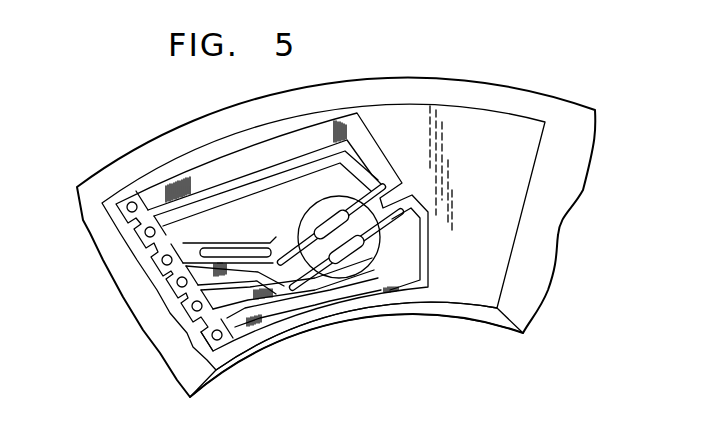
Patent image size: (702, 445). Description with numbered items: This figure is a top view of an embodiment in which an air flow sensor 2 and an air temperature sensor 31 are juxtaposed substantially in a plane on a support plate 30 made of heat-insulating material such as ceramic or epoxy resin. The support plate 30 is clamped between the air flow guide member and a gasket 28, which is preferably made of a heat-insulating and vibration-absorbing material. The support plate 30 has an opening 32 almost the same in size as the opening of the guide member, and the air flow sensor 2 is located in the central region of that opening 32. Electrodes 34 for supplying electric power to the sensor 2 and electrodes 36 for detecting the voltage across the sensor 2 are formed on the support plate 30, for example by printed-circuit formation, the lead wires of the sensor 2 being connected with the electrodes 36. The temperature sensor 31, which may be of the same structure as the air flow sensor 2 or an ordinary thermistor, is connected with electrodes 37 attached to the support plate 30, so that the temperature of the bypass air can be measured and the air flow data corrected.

The air flow sensor 2 is at (309, 211).
The gasket 28 is at (572, 108).
The support plate 30 is at (473, 295).
The temperature sensor 31 is at (372, 262).
The opening 32 is at (360, 271).
The electrodes 34 is at (122, 210).
The electrodes 36 is at (152, 262).
The electrodes 37 is at (216, 374).